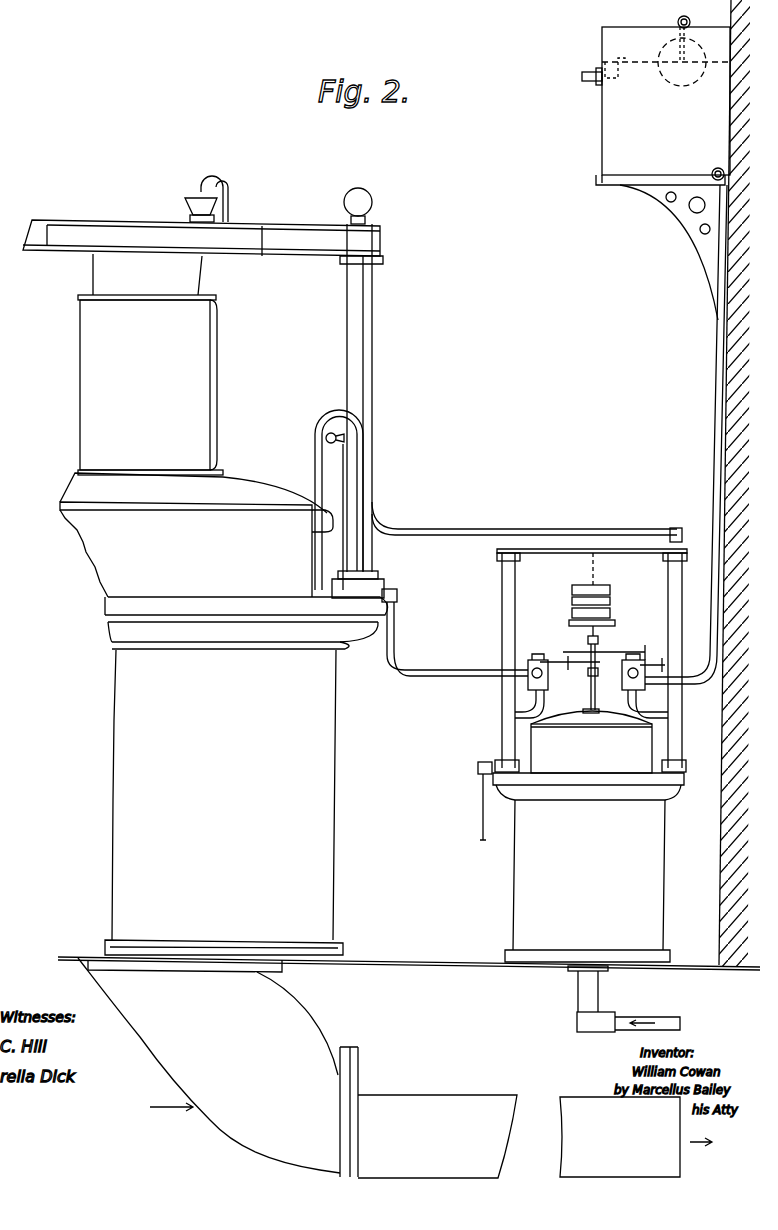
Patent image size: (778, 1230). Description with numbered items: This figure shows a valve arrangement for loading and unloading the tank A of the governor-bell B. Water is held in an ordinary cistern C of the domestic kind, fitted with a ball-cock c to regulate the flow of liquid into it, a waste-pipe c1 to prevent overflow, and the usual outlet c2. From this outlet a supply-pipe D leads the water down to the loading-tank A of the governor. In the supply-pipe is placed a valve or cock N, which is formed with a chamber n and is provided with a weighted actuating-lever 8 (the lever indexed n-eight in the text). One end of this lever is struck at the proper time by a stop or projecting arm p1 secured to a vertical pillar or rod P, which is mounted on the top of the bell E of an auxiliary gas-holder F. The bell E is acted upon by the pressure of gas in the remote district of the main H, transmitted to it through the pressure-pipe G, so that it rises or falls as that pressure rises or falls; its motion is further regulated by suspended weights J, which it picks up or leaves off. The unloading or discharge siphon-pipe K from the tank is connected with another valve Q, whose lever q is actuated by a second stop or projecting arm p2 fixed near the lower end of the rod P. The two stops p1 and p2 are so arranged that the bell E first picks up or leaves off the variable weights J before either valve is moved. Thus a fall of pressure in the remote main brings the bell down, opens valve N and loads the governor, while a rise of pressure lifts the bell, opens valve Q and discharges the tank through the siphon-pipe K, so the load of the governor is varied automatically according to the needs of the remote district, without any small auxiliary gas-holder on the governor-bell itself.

The tank A is at (196, 502).
The governor-bell B is at (224, 579).
The cistern C is at (663, 173).
The ball-cock c is at (690, 22).
The waste-pipe c1 is at (594, 84).
The outlet c2 is at (712, 173).
The supply-pipe D is at (231, 216).
The bell E is at (591, 742).
The auxiliary gas-holder F is at (581, 862).
The pressure-pipe G is at (682, 1023).
The main H is at (535, 1136).
The suspended weights J is at (612, 604).
The discharge siphon-pipe K is at (315, 464).
The valve N is at (622, 682).
The pillar P is at (590, 700).
The stop p1 is at (587, 641).
The stop p2 is at (587, 675).
The valve Q is at (542, 692).
The chamber n is at (606, 652).
The lever q is at (564, 658).
The weighted actuating-lever 8 is at (646, 644).